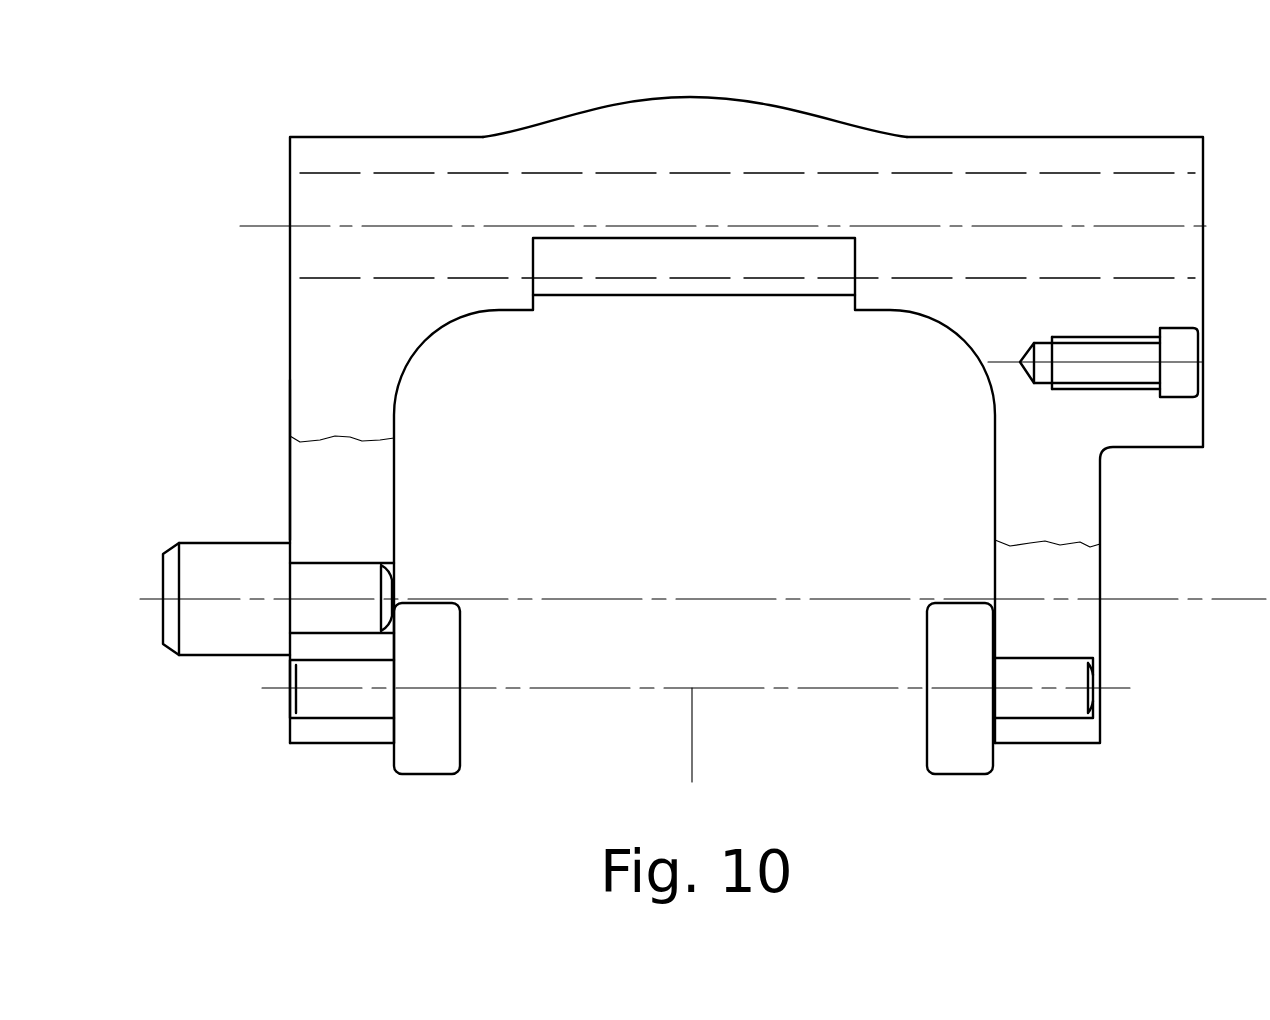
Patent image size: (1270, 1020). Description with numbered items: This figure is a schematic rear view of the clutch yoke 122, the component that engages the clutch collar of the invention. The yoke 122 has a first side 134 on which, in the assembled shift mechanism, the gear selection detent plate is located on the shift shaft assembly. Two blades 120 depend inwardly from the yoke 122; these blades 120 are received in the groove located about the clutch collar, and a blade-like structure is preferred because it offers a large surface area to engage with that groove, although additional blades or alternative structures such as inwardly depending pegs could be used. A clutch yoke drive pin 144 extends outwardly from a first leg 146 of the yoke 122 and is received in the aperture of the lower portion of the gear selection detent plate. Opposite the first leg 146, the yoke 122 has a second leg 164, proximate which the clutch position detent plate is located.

The blades 120 is at (425, 747).
The clutch yoke 122 is at (689, 88).
The first side 134 is at (331, 133).
The clutch yoke drive pin 144 is at (260, 567).
The first leg 146 is at (305, 339).
The second leg 164 is at (1072, 500).